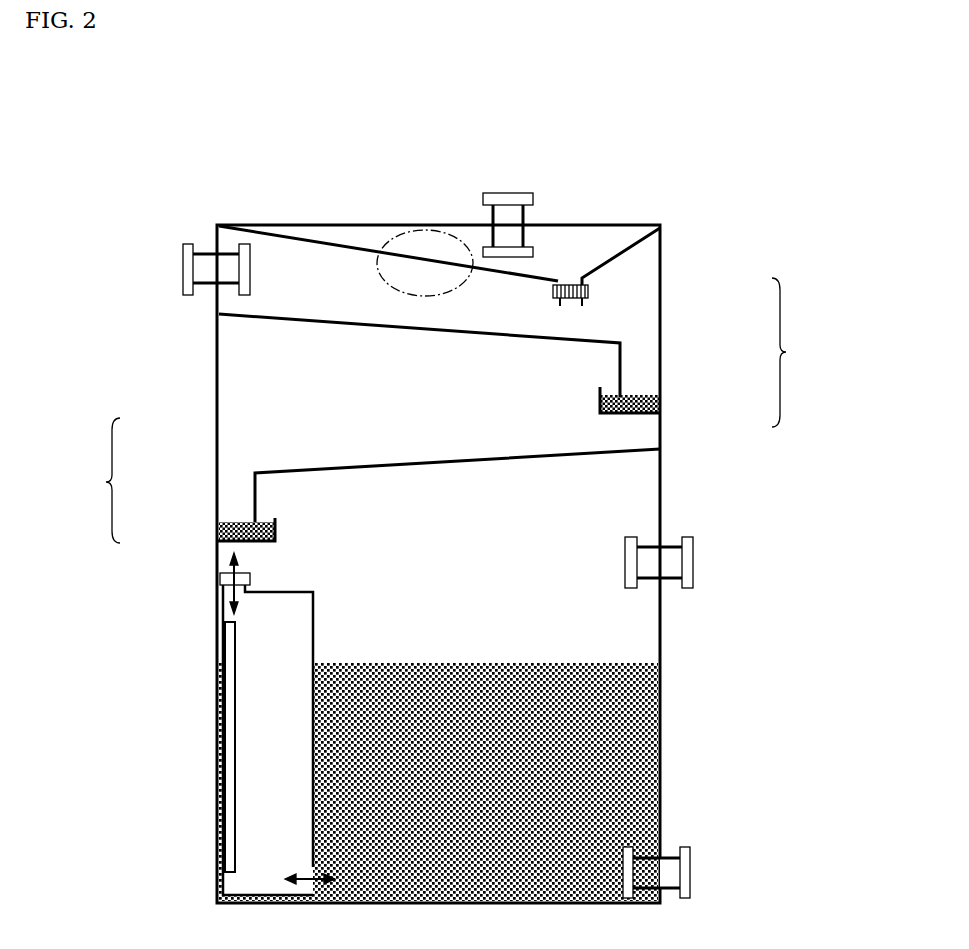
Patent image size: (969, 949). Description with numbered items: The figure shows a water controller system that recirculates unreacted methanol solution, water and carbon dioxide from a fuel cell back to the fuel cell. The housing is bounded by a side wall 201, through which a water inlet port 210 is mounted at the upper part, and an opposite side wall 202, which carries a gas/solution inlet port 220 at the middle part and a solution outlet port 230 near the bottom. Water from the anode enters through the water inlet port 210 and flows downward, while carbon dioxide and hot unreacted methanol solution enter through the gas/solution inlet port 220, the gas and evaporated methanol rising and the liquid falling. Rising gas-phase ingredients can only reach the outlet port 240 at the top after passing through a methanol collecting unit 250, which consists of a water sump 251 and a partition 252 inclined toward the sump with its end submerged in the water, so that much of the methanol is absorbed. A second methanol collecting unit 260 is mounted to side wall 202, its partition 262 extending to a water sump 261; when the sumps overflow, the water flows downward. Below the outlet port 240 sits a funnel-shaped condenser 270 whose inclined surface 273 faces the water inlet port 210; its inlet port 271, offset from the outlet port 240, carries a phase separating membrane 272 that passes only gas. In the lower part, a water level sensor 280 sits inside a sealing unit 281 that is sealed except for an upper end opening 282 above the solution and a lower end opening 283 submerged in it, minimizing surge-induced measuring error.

The side wall 201 is at (217, 363).
The side wall 202 is at (660, 495).
The water inlet port 210 is at (183, 264).
The gas/solution inlet port 220 is at (693, 567).
The solution outlet port 230 is at (690, 870).
The outlet port 240 is at (513, 193).
The methanol collecting unit 250 is at (798, 352).
The water sump 251 is at (642, 393).
The partition 252 is at (568, 337).
The methanol collecting unit 260 is at (95, 480).
The water sump 261 is at (240, 518).
The partition 262 is at (493, 460).
The condenser 270 is at (357, 236).
The inlet port of the condenser 271 is at (568, 305).
The phase separating membrane 272 is at (573, 283).
The inclined surface 273 is at (417, 258).
The water level sensor 280 is at (230, 730).
The sealing unit 281 is at (313, 633).
The upper end opening 282 is at (218, 565).
The lower end opening 283 is at (312, 868).